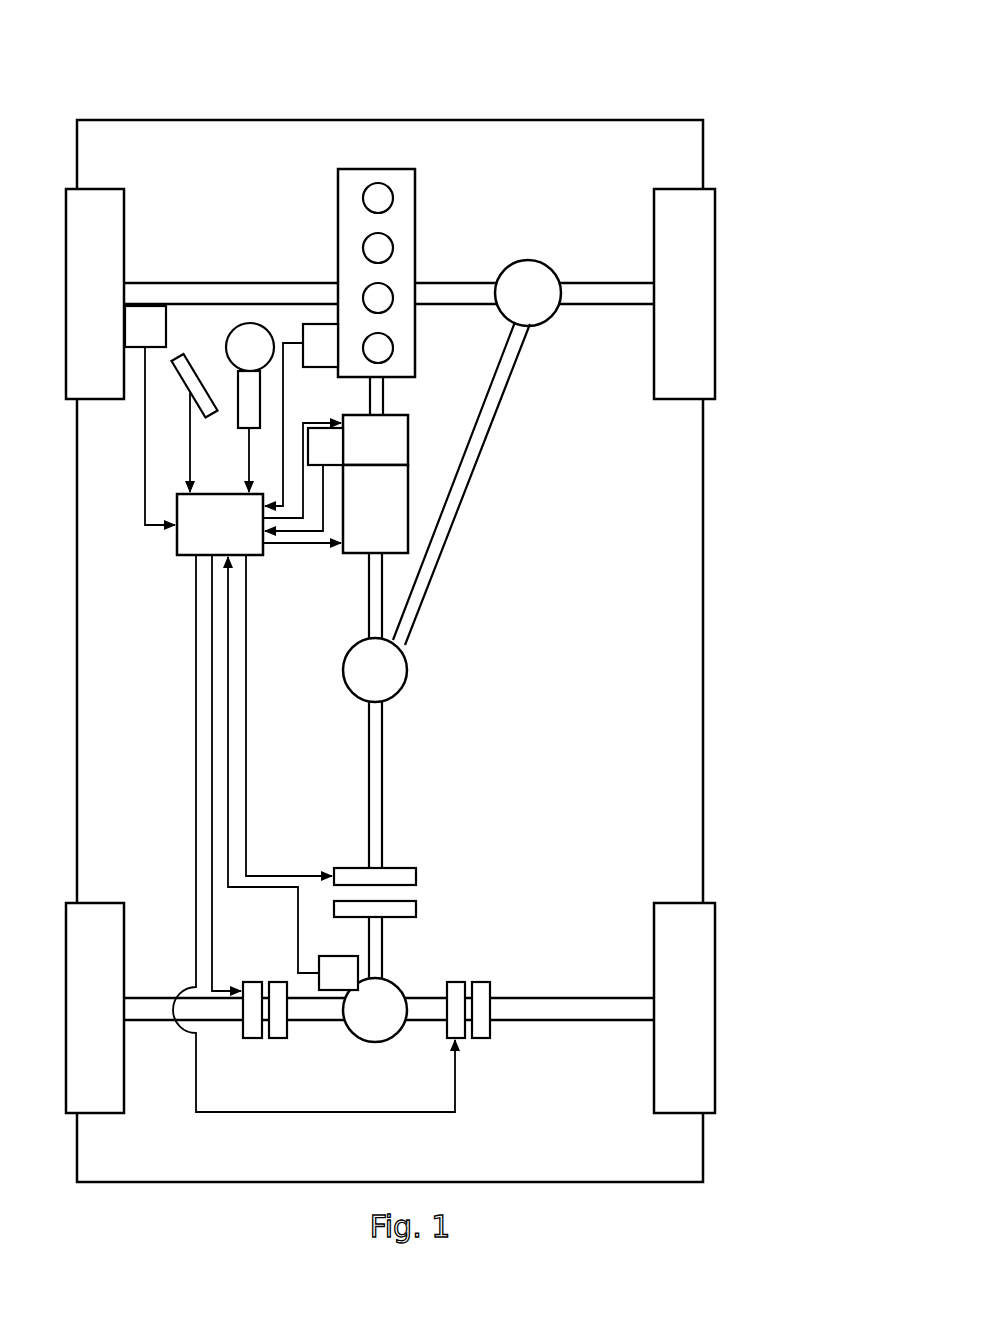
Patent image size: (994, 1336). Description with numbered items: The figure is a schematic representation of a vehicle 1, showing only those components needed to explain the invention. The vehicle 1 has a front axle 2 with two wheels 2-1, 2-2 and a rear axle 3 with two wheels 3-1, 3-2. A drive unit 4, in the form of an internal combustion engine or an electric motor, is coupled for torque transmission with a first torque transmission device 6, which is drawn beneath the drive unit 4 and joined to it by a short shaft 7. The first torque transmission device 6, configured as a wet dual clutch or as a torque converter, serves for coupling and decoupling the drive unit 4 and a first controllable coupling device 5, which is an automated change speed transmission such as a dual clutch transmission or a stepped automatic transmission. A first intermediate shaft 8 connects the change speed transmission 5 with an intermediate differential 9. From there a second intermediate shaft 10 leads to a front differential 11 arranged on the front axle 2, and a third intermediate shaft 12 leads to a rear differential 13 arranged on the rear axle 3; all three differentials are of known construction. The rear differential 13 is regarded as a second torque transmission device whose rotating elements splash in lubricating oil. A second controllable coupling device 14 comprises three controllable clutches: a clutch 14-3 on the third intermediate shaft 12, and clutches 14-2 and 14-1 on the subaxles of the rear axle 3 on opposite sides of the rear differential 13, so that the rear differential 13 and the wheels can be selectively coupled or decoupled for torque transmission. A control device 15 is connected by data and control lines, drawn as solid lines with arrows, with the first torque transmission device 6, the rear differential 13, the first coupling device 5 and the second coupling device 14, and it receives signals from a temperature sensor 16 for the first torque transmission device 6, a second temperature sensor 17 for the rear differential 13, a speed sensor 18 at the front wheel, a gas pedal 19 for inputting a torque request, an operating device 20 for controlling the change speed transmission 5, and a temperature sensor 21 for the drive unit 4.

The vehicle 1 is at (755, 138).
The front axle 2 is at (266, 268).
The wheel 2-1 is at (117, 241).
The wheel 2-2 is at (656, 237).
The rear axle 3 is at (557, 1056).
The wheel 3-1 is at (108, 950).
The wheel 3-2 is at (655, 968).
The drive unit 4 is at (402, 218).
The first controllable coupling device 5 is at (366, 524).
The first torque transmission device 6 is at (366, 455).
The engine output shaft 7 is at (384, 394).
The first intermediate shaft 8 is at (369, 597).
The intermediate differential 9 is at (366, 685).
The second intermediate shaft 10 is at (474, 467).
The front differential 11 is at (517, 308).
The third intermediate shaft 12 is at (369, 784).
The rear differential 13 is at (364, 1025).
The second controllable coupling device 14 is at (543, 848).
The controllable clutch 14-1 is at (490, 966).
The controllable clutch 14-2 is at (297, 1040).
The controllable clutch 14-3 is at (434, 888).
The control device 15 is at (209, 539).
The temperature sensor 16 is at (314, 461).
The second temperature sensor 17 is at (327, 987).
The speed sensor 18 is at (134, 341).
The gas pedal 19 is at (205, 416).
The operating device 20 is at (239, 362).
The temperature sensor 21 is at (309, 360).